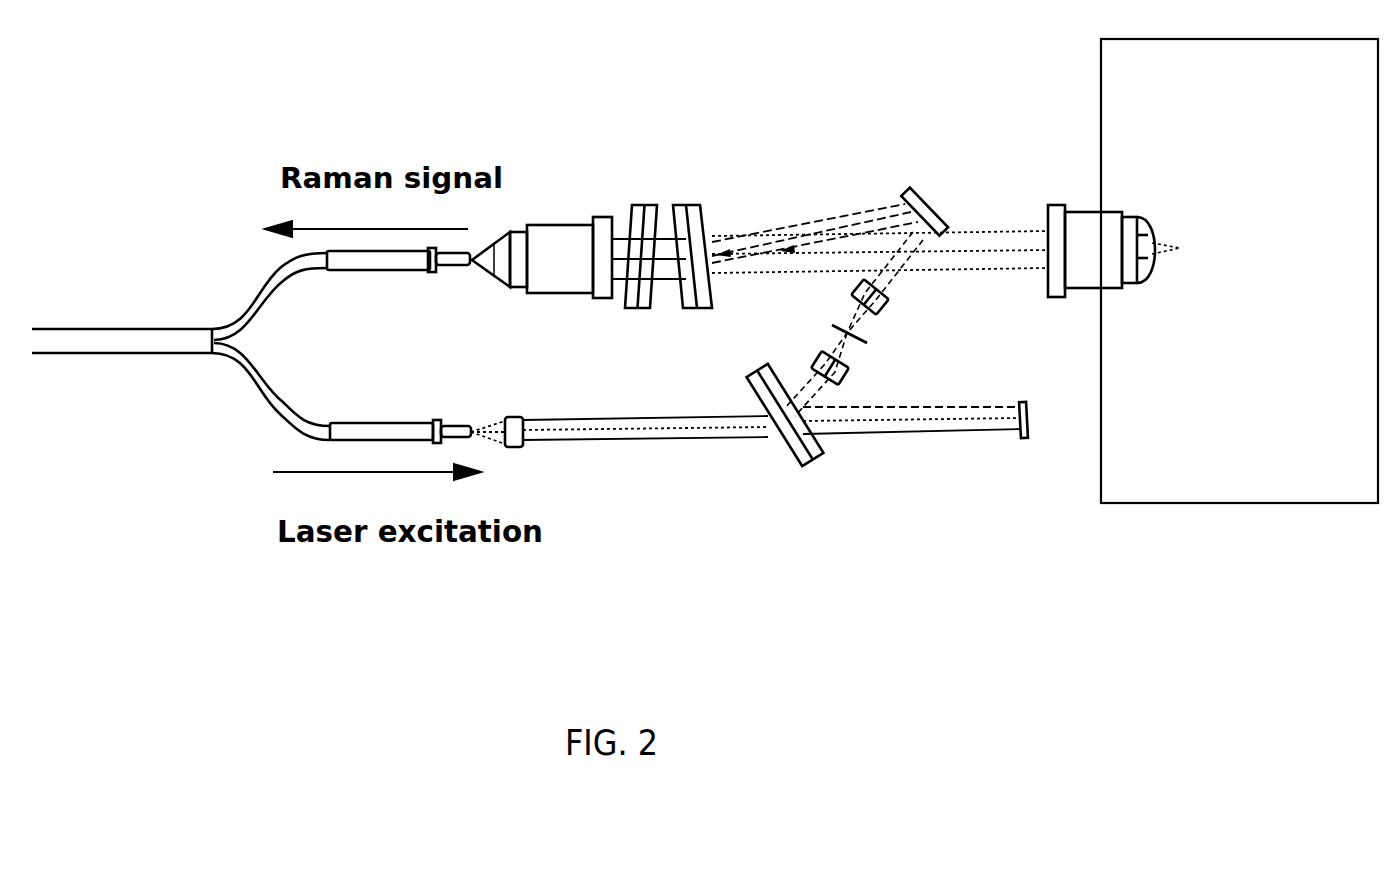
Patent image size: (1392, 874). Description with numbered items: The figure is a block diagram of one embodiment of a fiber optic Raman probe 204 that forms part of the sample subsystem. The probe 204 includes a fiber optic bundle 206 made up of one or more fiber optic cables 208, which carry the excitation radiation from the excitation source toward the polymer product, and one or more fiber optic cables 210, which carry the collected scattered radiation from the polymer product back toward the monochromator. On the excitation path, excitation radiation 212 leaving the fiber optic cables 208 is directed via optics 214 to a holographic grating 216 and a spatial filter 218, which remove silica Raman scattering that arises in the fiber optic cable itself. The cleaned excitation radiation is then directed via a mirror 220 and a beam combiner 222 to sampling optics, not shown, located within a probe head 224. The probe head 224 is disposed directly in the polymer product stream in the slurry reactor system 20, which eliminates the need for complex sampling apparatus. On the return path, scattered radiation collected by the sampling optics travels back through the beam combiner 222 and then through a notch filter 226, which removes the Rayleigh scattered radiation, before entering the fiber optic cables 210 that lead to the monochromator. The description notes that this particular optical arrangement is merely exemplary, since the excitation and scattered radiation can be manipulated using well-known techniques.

The probe 204 is at (206, 207).
The fiber optic bundle 206 is at (113, 355).
The fiber optic cables 208 is at (252, 393).
The fiber optic cables 210 is at (247, 303).
The excitation radiation 212 is at (616, 416).
The optics 214 is at (516, 447).
The holographic grating 216 is at (812, 464).
The spatial filter 218 is at (880, 339).
The mirror 220 is at (918, 190).
The beam combiner 222 is at (699, 196).
The probe head 224 is at (1090, 211).
The notch filter 226 is at (638, 196).
The slurry reactor system 20 is at (1227, 322).